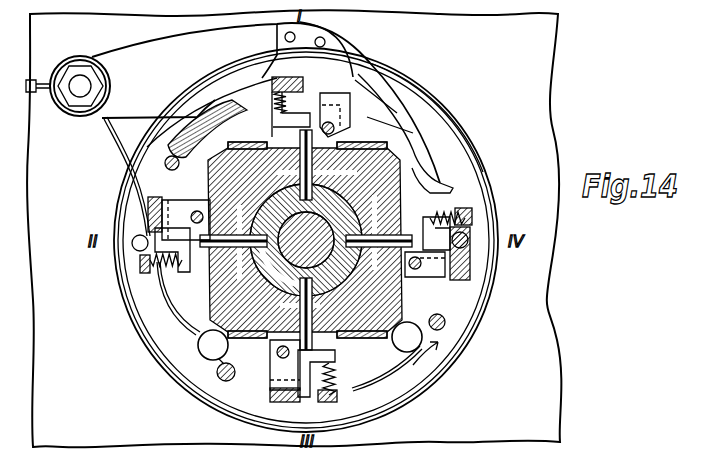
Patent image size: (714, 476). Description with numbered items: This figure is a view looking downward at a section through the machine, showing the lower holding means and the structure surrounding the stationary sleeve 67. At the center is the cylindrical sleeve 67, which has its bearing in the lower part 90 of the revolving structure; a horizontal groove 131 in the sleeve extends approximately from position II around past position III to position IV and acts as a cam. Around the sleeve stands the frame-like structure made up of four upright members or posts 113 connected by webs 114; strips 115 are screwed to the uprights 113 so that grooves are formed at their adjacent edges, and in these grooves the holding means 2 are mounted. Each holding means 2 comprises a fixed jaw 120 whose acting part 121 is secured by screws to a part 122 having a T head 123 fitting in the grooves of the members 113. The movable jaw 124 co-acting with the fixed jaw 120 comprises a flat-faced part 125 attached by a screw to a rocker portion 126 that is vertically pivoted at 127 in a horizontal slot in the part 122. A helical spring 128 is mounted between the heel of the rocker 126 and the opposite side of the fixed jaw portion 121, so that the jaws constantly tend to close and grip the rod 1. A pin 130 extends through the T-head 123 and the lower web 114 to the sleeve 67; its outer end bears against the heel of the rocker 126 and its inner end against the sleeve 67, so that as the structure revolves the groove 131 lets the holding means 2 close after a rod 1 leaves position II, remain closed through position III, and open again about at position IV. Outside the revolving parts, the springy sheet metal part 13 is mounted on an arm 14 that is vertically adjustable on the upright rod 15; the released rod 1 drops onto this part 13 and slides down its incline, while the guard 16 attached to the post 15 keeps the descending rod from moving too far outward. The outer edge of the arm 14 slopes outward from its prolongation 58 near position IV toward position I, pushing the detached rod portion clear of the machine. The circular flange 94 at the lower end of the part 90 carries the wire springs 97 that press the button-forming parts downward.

The rod 1 is at (305, 90).
The lower holding means 2 is at (306, 240).
The springy sheet metal part 13 is at (212, 124).
The arm 14 is at (231, 70).
The upright rod 15 is at (81, 82).
The guard 16 is at (118, 147).
The prolongation 58 is at (411, 117).
The sleeve 67 is at (306, 240).
The lower part of the structure 90 is at (430, 388).
The circular flange 94 is at (152, 342).
The wire springs 97 is at (428, 146).
The upright members or posts 113 is at (305, 240).
The webs 114 is at (362, 254).
The strips 115 is at (258, 143).
The fixed jaw 120 is at (306, 239).
The acting part of the fixed jaw 121 is at (470, 206).
The part carrying the jaws 122 is at (405, 322).
The T head or base portion 123 is at (330, 270).
The movable jaw 124 is at (345, 108).
The gripping part of the movable jaw 125 is at (470, 290).
The rocker portion 126 is at (452, 285).
The pivot 127 is at (425, 264).
The helical spring 128 is at (469, 186).
The pin 130 is at (419, 185).
The horizontal groove 131 is at (259, 298).